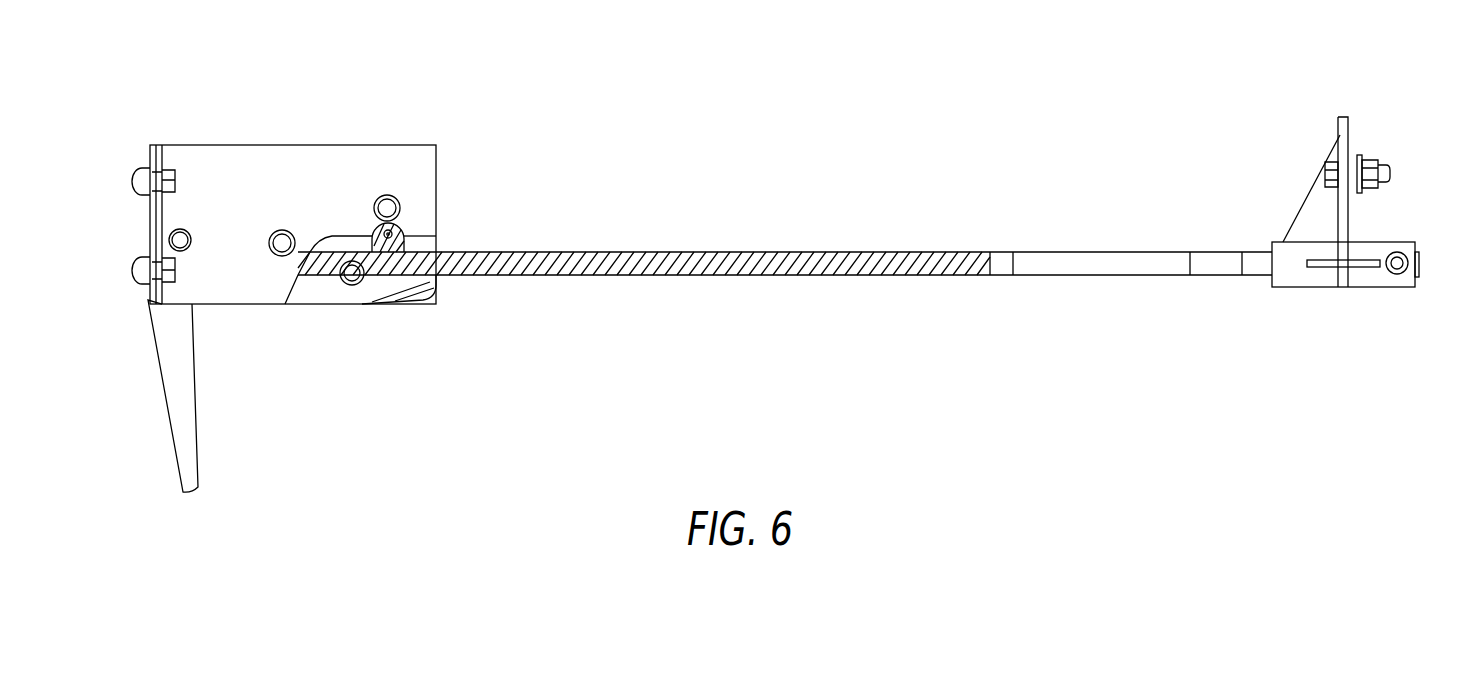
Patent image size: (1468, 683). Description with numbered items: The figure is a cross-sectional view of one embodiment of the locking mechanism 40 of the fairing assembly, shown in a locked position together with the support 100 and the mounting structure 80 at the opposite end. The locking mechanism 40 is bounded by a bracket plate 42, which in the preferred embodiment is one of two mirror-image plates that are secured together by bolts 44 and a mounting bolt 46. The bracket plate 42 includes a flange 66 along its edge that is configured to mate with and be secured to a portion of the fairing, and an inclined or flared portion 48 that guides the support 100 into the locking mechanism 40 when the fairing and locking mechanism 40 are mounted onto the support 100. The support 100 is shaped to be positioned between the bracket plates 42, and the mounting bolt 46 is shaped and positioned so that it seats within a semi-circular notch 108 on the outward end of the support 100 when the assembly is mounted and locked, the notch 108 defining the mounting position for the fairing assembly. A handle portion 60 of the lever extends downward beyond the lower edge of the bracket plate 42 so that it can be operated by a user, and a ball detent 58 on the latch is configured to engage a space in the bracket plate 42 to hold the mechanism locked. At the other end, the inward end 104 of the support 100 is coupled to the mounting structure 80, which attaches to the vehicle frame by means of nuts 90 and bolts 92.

The locking mechanism 40 is at (297, 265).
The bracket plate 42 is at (425, 163).
The bolts 44 is at (180, 240).
The mounting bolt 46 is at (339, 321).
The flared portion 48 is at (427, 293).
The ball detent 58 is at (403, 237).
The handle portion 60 is at (200, 468).
The flange 66 is at (150, 152).
The mounting structure 80 is at (1357, 245).
The nuts 90 is at (1368, 160).
The bolts 92 is at (1325, 175).
The support 100 is at (713, 277).
The inward end 104 is at (1420, 262).
The semi-circular notch 108 is at (350, 278).